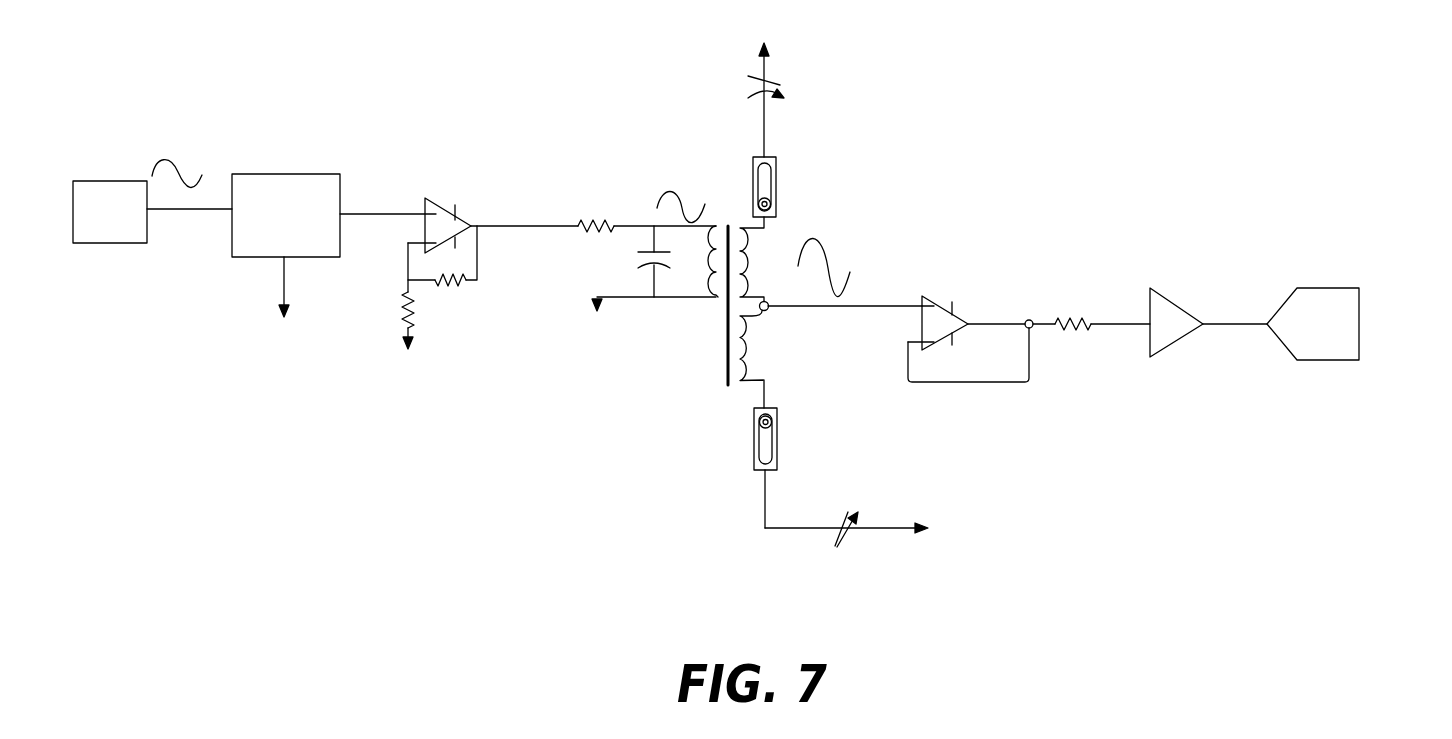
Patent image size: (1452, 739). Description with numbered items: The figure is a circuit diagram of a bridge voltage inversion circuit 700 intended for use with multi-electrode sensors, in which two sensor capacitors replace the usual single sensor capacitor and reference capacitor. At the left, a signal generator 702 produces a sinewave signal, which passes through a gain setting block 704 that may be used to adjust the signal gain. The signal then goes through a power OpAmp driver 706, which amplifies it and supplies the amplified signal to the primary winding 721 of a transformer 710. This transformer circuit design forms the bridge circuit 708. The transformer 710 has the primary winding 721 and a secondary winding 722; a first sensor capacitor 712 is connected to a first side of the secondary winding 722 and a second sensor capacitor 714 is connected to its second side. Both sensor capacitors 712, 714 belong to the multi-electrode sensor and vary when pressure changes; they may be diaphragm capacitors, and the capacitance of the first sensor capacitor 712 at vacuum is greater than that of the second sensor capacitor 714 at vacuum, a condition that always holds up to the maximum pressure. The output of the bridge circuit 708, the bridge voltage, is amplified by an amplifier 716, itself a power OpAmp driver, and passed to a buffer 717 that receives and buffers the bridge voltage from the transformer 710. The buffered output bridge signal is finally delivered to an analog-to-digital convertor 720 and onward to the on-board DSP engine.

The bridge voltage inversion circuit 700 is at (272, 468).
The signal generator 702 is at (102, 181).
The gain setting block 704 is at (265, 174).
The power OpAmp driver 706 is at (427, 198).
The bridge circuit 708 is at (937, 89).
The transformer 710 is at (726, 313).
The first sensor capacitor 712 is at (790, 84).
The second sensor capacitor 714 is at (861, 488).
The amplifier 716 is at (935, 297).
The buffer 717 is at (1165, 297).
The analog-to-digital convertor 720 is at (1310, 288).
The primary winding 721 is at (716, 226).
The secondary winding 722 is at (752, 262).